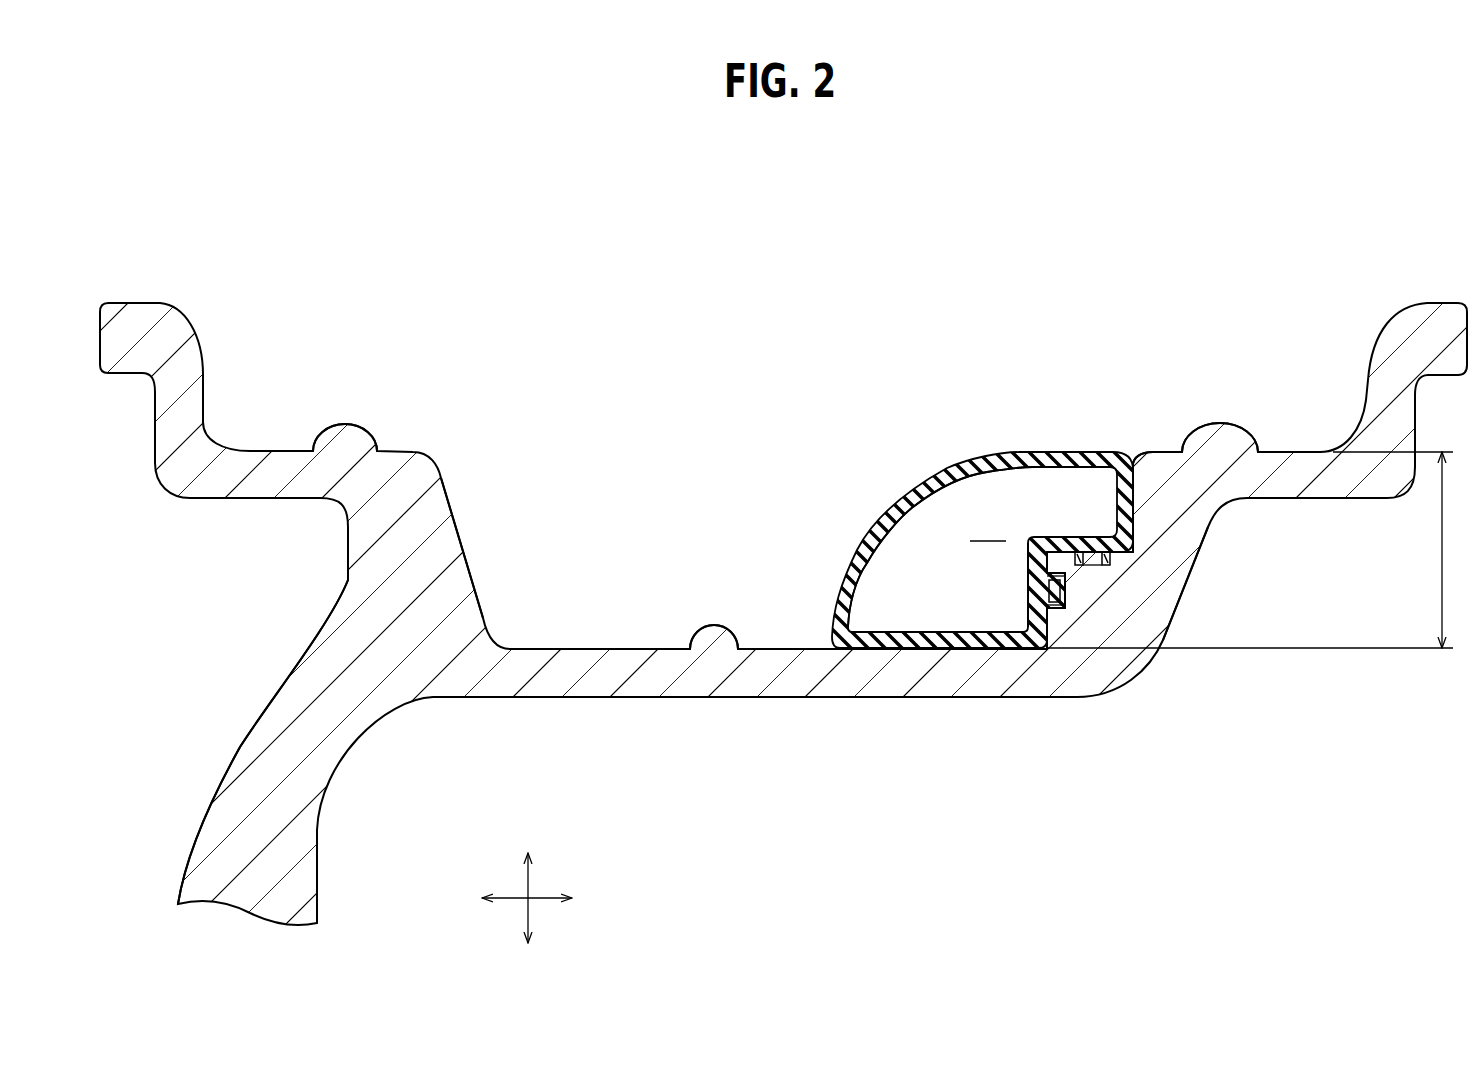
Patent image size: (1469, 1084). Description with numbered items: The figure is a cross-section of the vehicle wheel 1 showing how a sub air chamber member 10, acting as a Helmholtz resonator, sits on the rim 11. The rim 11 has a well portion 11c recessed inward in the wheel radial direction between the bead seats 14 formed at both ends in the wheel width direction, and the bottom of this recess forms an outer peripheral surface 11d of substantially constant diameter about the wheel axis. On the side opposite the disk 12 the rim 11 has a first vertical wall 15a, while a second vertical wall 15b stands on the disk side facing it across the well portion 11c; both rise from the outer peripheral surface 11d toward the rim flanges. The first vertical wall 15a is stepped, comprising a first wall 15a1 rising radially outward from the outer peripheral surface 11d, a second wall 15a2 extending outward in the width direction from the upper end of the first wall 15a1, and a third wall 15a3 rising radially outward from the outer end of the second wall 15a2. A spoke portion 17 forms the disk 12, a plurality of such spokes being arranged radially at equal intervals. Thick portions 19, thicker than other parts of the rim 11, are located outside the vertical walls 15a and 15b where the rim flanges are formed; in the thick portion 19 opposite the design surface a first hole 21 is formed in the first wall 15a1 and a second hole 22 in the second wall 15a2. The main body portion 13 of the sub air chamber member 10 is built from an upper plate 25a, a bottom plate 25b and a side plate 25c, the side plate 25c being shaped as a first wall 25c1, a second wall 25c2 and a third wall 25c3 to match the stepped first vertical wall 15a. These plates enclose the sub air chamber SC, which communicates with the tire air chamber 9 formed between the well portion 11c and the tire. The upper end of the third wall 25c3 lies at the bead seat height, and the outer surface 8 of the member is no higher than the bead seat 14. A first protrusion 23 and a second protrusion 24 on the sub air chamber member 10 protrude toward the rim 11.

The vehicle wheel 1 is at (472, 265).
The outer surface 8 is at (1017, 453).
The tire air chamber 9 is at (800, 274).
The sub air chamber member 10 is at (930, 540).
The rim 11 is at (118, 300).
The well portion 11c is at (687, 485).
The outer peripheral surface 11d is at (735, 660).
The disk 12 is at (193, 768).
The main body portion 13 is at (991, 673).
The bead seat 14 is at (282, 449).
The first vertical wall 15a is at (923, 342).
The first wall 15a1 is at (1028, 622).
The second wall 15a2 is at (1040, 560).
The third wall 15a3 is at (1103, 550).
The second vertical wall 15b is at (463, 543).
The spoke portion 17 is at (208, 843).
The thick portion 19 is at (393, 602).
The first hole 21 is at (1050, 612).
The second hole 22 is at (1112, 568).
The first protrusion 23 is at (1033, 575).
The second protrusion 24 is at (1075, 557).
The upper plate 25a is at (878, 527).
The bottom plate 25b is at (933, 655).
The side plate 25c is at (955, 858).
The first wall 25c1 is at (1037, 640).
The second wall 25c2 is at (1085, 612).
The third wall 25c3 is at (1128, 560).